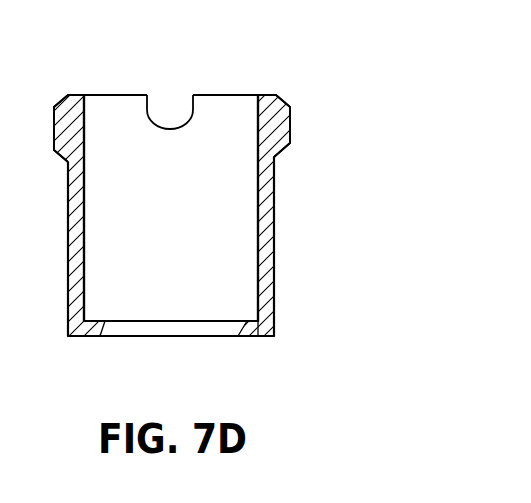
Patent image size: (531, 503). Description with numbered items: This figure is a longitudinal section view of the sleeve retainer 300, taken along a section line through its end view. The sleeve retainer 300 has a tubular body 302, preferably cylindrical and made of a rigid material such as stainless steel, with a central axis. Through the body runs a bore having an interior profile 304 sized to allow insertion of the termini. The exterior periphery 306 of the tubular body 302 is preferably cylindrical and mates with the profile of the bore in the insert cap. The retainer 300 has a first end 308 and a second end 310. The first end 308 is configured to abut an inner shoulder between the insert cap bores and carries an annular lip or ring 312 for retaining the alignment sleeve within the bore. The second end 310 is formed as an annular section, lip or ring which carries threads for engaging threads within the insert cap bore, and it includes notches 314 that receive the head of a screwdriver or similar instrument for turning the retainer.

The sleeve retainer 300 is at (297, 42).
The tubular body 302 is at (274, 254).
The interior profile 304 is at (258, 220).
The exterior periphery 306 is at (69, 195).
The first end 308 is at (262, 337).
The second end 310 is at (66, 96).
The annular lip or ring 312 is at (246, 337).
The notches 314 is at (174, 103).